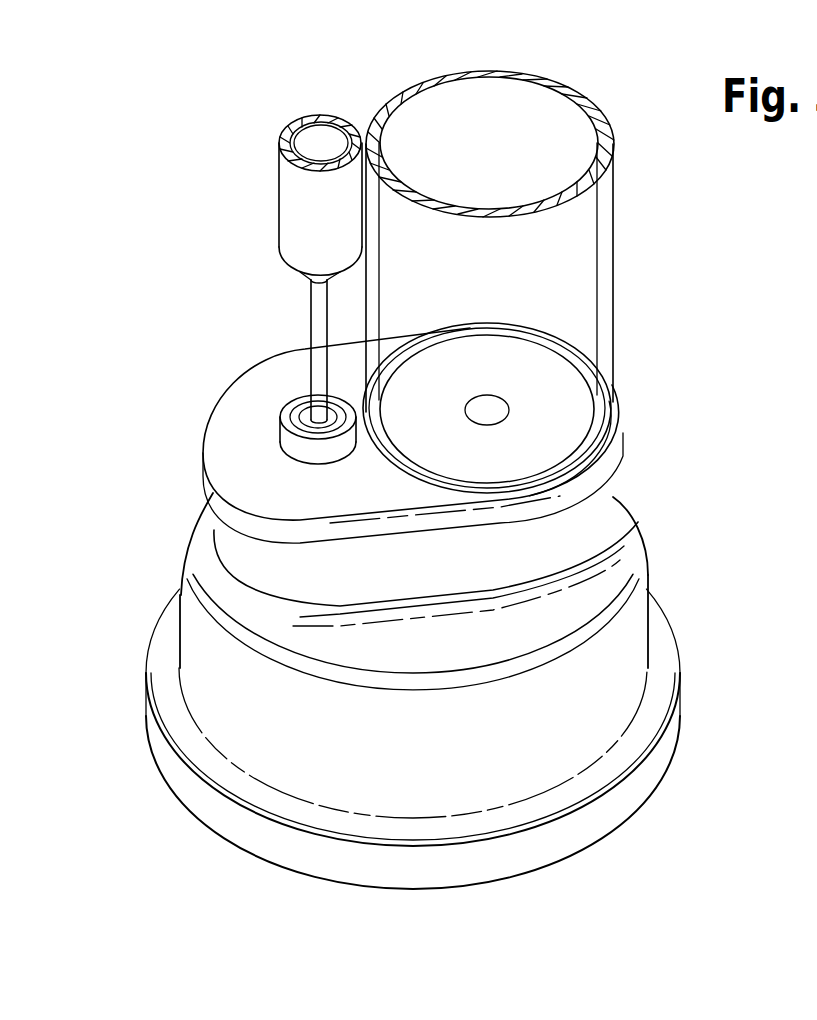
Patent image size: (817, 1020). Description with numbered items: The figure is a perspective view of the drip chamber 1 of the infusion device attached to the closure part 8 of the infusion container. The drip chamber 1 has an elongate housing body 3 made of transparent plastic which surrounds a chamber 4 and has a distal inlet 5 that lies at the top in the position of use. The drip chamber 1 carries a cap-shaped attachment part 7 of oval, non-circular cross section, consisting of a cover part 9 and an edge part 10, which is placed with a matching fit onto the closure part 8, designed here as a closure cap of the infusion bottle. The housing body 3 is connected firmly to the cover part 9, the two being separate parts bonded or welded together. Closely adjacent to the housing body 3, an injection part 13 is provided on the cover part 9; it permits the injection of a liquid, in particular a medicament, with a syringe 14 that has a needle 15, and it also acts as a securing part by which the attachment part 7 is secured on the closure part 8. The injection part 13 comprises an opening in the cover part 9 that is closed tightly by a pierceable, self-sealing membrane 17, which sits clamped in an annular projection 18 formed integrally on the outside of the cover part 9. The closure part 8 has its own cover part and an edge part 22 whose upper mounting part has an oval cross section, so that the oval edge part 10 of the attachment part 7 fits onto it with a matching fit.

The drip chamber 1 is at (545, 241).
The housing body 3 is at (605, 258).
The chamber 4 is at (604, 300).
The distal inlet 5 is at (612, 430).
The attachment part 7 is at (617, 398).
The closure part 8 is at (650, 560).
The cover part 9 is at (285, 368).
The edge part 10 is at (237, 547).
The injection part 13 is at (238, 412).
The syringe 14 is at (280, 200).
The needle 15 is at (317, 312).
The membrane 17 is at (297, 410).
The annular projection 18 is at (290, 443).
The edge part 22 is at (618, 665).